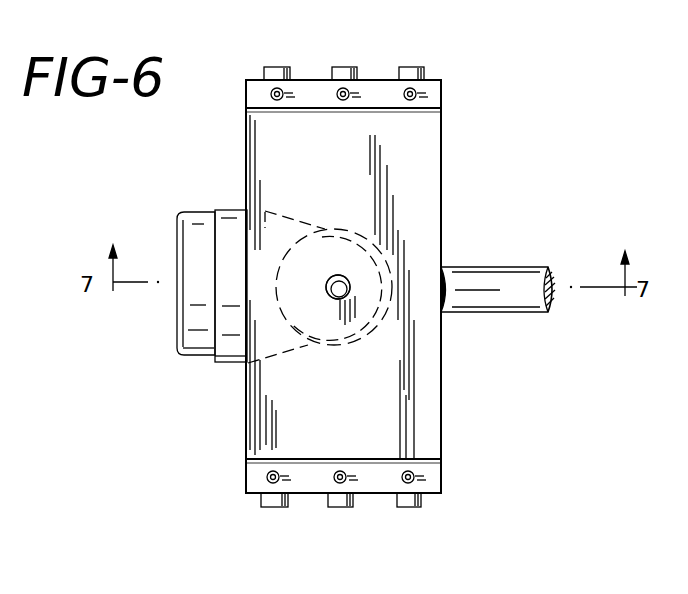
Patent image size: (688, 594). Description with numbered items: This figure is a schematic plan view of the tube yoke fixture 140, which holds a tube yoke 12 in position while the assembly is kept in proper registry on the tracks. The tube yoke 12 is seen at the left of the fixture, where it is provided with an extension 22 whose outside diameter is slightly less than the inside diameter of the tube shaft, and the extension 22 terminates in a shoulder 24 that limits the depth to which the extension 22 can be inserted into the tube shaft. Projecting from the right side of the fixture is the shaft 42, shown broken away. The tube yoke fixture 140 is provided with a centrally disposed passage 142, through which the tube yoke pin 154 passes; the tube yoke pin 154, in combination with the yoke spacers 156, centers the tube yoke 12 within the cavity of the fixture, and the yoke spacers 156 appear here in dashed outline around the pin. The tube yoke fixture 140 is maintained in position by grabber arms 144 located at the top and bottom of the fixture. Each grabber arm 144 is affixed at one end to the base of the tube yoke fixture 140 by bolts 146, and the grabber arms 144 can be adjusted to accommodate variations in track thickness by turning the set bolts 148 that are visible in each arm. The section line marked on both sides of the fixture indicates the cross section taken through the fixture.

The tube yoke 12 is at (213, 358).
The extension 22 is at (193, 337).
The shoulder 24 is at (208, 264).
The shaft 42 is at (500, 266).
The tube yoke fixture 140 is at (518, 135).
The centrally disposed passage 142 is at (331, 298).
The grabber arms 144 is at (441, 92).
The bolts 146 is at (410, 66).
The set bolts 148 is at (405, 98).
The tube yoke pin 154 is at (350, 280).
The yoke spacers 156 is at (385, 325).